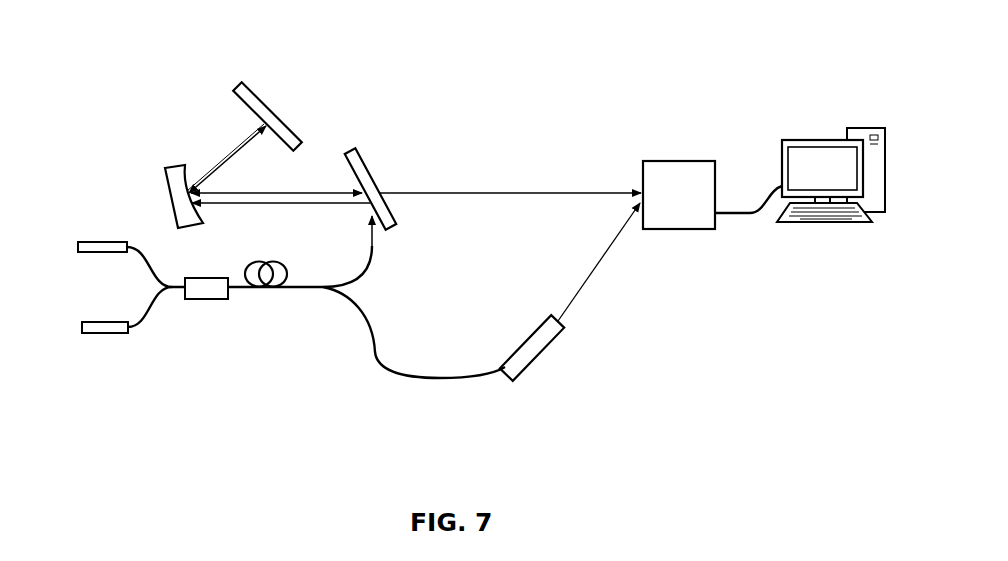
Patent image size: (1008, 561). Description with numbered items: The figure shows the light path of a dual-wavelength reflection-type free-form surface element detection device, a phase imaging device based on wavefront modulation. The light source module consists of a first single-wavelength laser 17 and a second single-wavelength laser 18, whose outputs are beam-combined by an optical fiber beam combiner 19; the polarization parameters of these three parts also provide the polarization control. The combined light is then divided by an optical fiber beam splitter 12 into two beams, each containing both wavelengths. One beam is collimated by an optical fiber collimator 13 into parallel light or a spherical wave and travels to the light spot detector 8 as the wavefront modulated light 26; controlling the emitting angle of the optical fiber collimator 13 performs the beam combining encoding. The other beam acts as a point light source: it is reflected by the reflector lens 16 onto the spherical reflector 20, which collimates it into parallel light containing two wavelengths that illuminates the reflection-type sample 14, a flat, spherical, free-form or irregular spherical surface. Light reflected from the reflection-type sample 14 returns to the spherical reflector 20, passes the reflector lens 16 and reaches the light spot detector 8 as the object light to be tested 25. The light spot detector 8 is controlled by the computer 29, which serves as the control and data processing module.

The light spot detector 8 is at (706, 172).
The optical fiber beam splitter 12 is at (268, 288).
The optical fiber collimator 13 is at (542, 330).
The reflection-type sample 14 is at (268, 120).
The reflector lens 16 is at (364, 170).
The first single-wavelength laser 17 is at (100, 334).
The second single-wavelength laser 18 is at (110, 242).
The optical fiber beam combiner 19 is at (197, 290).
The spherical reflector 20 is at (182, 172).
The object light to be tested 25 is at (508, 192).
The wavefront modulated light 26 is at (608, 247).
The computer 29 is at (813, 140).